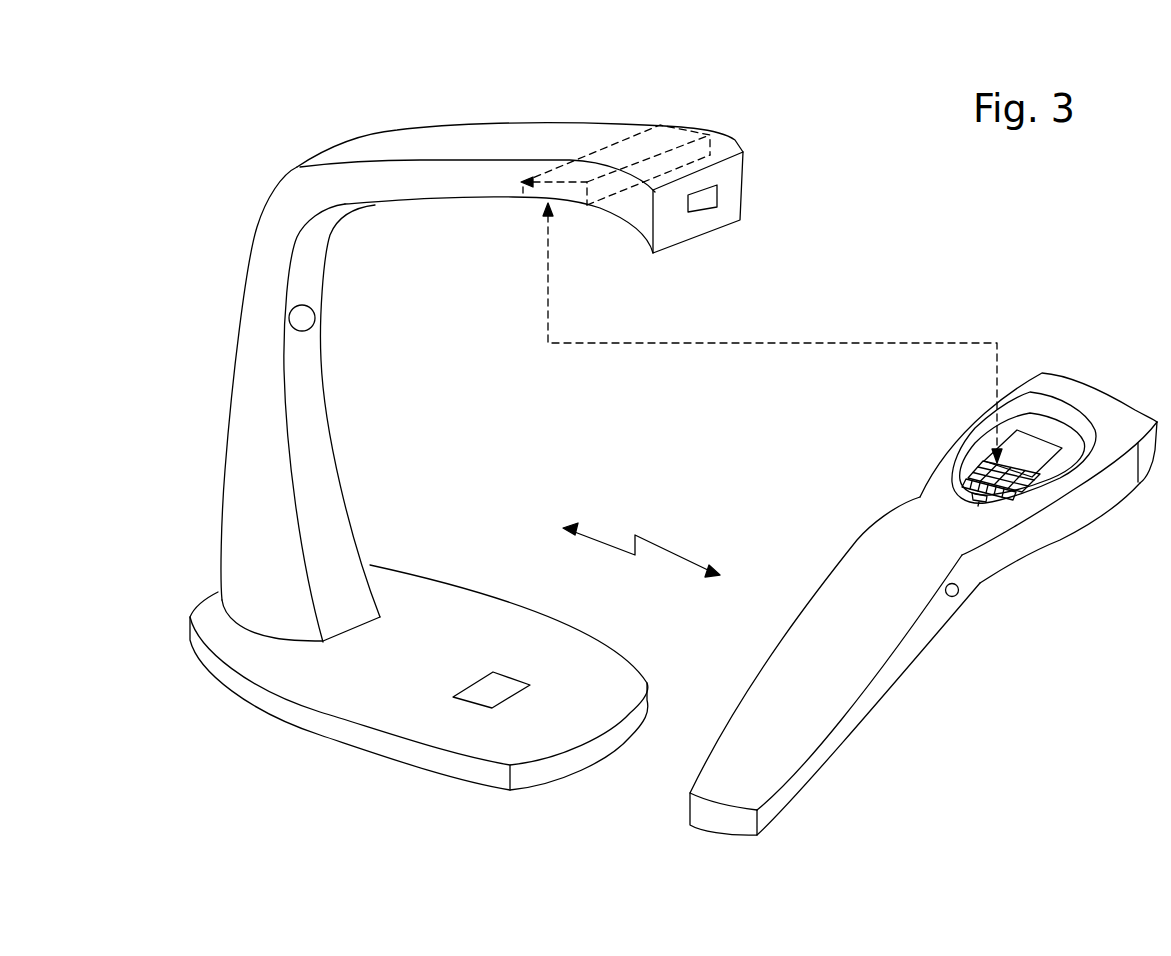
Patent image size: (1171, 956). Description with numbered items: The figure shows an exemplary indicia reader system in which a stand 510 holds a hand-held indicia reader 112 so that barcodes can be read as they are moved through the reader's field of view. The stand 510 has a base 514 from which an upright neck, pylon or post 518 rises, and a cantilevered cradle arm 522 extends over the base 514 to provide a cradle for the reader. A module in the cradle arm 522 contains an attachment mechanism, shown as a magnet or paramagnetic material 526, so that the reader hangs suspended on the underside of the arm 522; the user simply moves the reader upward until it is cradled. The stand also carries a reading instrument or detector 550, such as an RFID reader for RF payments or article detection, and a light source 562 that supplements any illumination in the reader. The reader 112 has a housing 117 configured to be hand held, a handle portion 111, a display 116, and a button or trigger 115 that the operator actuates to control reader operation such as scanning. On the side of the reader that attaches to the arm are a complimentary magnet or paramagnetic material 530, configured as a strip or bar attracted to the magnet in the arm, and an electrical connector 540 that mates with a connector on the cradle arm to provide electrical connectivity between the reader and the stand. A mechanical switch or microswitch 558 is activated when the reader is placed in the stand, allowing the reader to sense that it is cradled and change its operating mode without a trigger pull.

The stand 510 is at (343, 105).
The cantilevered cradle arm 522 is at (491, 197).
The magnet or paramagnetic material 526 is at (633, 140).
The reading instrument or detector 550 is at (717, 193).
The upright neck, pylon or post 518 is at (322, 430).
The light source 562 is at (315, 318).
The base 514 is at (460, 723).
The hand-held indicia reader 112 is at (848, 513).
The handle portion 111 is at (837, 770).
The housing 117 is at (1037, 540).
The display 116 is at (1050, 458).
The complimentary magnet or paramagnetic material 530 is at (988, 462).
The electrical connector 540 is at (966, 483).
The mechanical switch or microswitch 558 is at (978, 503).
The button or trigger 115 is at (960, 587).